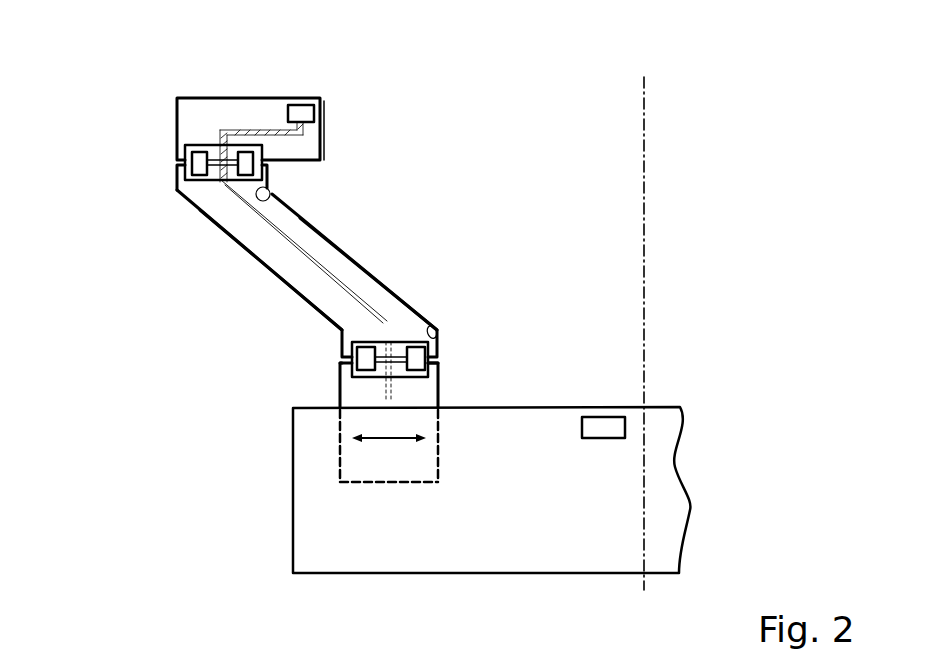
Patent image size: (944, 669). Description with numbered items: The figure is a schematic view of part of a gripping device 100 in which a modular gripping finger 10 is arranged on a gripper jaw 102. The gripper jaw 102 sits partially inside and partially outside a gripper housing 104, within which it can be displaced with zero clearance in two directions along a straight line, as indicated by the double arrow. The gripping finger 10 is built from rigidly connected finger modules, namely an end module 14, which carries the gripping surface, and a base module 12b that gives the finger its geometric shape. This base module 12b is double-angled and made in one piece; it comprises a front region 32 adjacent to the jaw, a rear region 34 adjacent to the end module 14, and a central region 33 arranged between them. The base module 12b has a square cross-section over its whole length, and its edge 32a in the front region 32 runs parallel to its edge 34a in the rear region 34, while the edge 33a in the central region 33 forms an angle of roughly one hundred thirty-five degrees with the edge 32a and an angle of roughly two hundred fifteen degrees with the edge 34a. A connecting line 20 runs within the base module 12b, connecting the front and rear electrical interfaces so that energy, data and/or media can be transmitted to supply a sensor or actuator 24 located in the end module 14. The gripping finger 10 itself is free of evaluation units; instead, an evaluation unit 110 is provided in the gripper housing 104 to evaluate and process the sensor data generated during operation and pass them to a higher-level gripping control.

The gripping device 100 is at (93, 2).
The gripping finger 10 is at (145, 37).
The end module 14 is at (246, 113).
The sensor 24 is at (302, 113).
The rear region 34 is at (207, 187).
The edge 34a is at (270, 178).
The central region 33 is at (263, 245).
The edge 33a is at (360, 268).
The base module 12b is at (290, 270).
The connecting line 20 is at (335, 280).
The front region 32 is at (342, 342).
The edge 32a is at (440, 338).
The gripper jaw 102 is at (360, 392).
The gripper housing 104 is at (313, 473).
The evaluation unit 110 is at (603, 425).